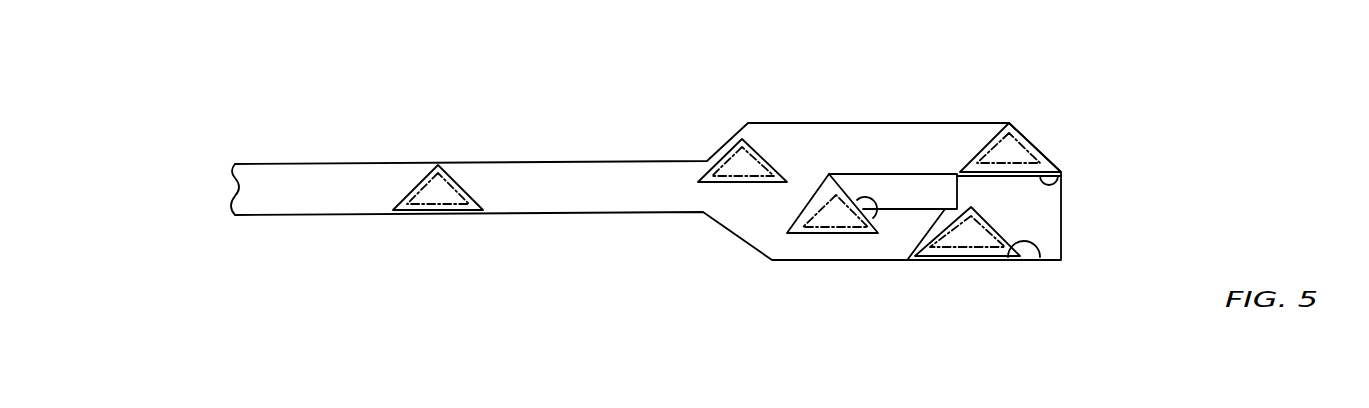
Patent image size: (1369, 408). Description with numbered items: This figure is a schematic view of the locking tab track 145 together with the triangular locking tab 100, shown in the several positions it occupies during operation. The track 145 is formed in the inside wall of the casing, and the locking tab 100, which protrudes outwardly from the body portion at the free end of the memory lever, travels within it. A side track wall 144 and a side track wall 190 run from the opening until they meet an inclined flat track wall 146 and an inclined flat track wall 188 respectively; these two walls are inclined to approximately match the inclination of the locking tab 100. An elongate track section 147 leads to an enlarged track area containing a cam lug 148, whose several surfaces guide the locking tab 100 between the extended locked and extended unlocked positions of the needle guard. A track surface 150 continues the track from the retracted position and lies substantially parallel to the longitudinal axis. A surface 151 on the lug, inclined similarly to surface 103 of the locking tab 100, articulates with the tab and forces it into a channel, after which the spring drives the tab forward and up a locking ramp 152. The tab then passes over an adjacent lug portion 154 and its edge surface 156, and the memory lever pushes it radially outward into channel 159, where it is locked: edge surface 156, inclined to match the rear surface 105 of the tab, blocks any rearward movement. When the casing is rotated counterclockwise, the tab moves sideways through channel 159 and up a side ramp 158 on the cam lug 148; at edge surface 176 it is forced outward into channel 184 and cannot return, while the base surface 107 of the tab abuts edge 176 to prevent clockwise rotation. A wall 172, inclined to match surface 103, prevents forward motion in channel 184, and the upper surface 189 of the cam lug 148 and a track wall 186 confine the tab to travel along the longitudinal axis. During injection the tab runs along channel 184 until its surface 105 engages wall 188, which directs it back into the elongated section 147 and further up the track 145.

The locking tab 100 is at (436, 211).
The surface of locking tab 103 is at (1017, 248).
The rear surface of locking tab 105 is at (957, 239).
The base surface of locking tab 107 is at (988, 248).
The side track wall 144 is at (532, 214).
The locking tab track 145 is at (591, 80).
The inclined flat track wall 146 is at (727, 232).
The elongate track section 147 is at (350, 195).
The cam lug 148 is at (916, 199).
The track surface 150 is at (782, 263).
The surface on lug 151 is at (877, 231).
The locking ramp 152 is at (893, 240).
The lug portion 154 is at (912, 228).
The edge surface 156 is at (935, 257).
The side ramp 158 is at (1027, 198).
The channel 159 is at (1032, 225).
The wall of track 172 is at (1030, 140).
The edge surface of ramp 176 is at (1063, 178).
The channel 184 is at (857, 158).
The track wall 186 is at (805, 122).
The inclined flat track wall 188 is at (738, 137).
The upper surface of cam lug 189 is at (904, 173).
The side track wall 190 is at (522, 160).